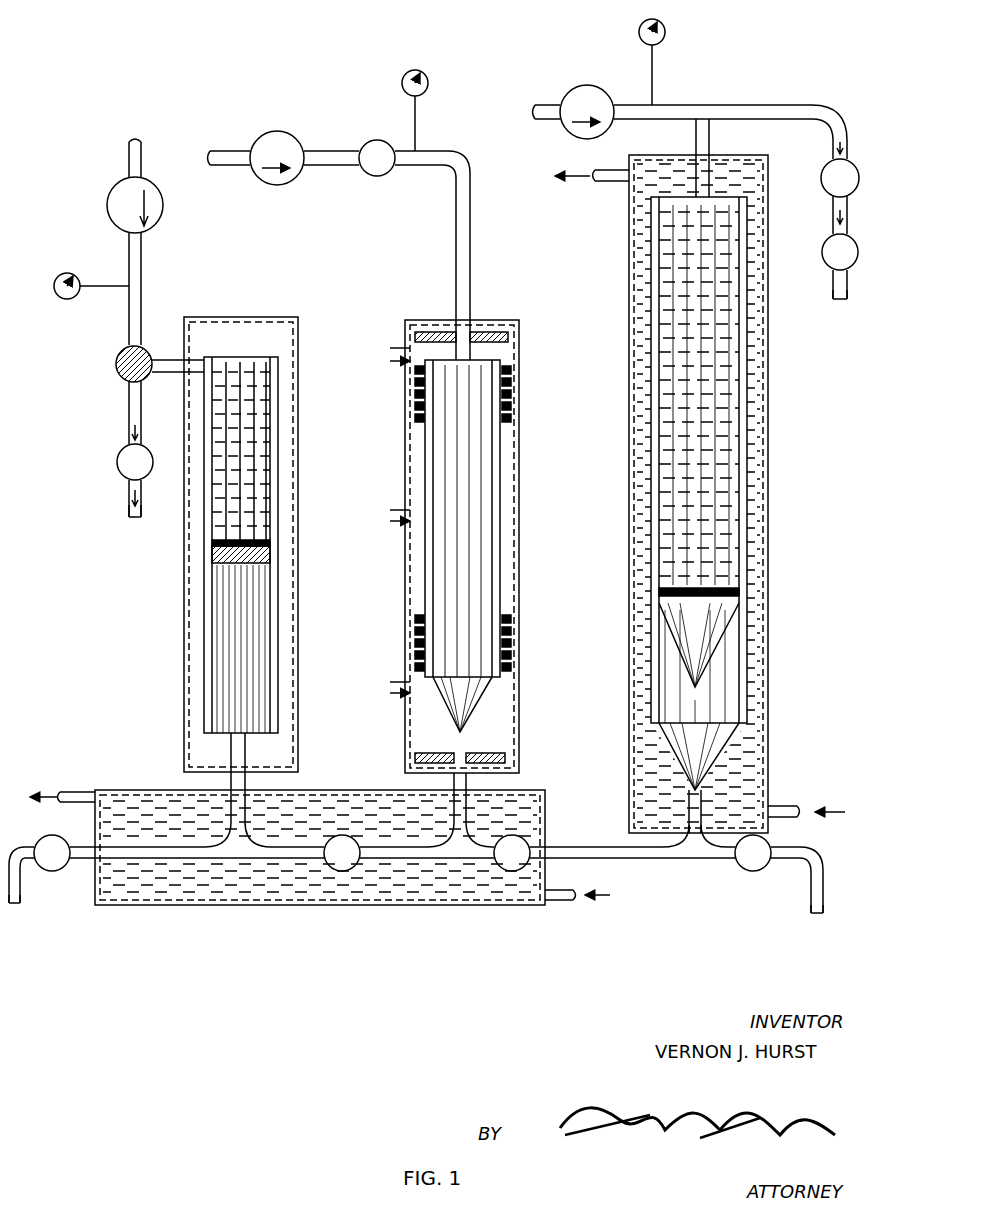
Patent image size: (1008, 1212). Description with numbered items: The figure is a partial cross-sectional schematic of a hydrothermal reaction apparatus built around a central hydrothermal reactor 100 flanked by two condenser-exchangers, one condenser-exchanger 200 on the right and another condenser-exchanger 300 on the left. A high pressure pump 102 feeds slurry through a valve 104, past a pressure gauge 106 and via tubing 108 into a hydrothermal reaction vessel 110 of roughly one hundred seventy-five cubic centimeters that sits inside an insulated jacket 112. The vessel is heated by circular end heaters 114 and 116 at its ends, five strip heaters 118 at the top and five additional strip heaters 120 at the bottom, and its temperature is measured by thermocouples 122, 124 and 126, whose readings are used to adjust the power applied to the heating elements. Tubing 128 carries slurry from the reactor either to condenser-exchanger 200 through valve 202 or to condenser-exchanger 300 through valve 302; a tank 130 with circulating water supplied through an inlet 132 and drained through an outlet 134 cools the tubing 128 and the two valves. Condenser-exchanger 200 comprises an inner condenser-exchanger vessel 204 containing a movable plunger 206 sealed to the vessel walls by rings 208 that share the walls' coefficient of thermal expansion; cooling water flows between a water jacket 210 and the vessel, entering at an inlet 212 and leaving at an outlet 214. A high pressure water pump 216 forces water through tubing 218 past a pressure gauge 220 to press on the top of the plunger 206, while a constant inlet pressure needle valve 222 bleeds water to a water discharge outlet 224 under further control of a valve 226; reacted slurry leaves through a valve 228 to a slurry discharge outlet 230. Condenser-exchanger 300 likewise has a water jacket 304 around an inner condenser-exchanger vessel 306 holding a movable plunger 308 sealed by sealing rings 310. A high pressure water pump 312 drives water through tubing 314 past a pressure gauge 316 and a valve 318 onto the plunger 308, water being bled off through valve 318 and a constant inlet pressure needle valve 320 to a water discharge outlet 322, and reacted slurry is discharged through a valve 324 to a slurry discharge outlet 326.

The hydrothermal reactor 100 is at (454, 527).
The high pressure pump 102 is at (258, 136).
The valve 104 is at (358, 131).
The pressure gauge 106 is at (446, 100).
The tubing 108 is at (369, 232).
The hydrothermal reaction vessel 110 is at (501, 526).
The insulated jacket 112 is at (491, 546).
The circular end heater 114 is at (496, 348).
The circular end heater 116 is at (496, 743).
The strip heaters 118 is at (496, 394).
The strip heaters 120 is at (496, 632).
The thermocouple 122 is at (370, 321).
The thermocouple 124 is at (371, 671).
The thermocouple 126 is at (373, 538).
The tubing 128 is at (416, 838).
The tank 130 is at (349, 847).
The inlet 132 is at (577, 917).
The outlet 134 is at (54, 774).
The condenser-exchanger 200 is at (738, 494).
The valve 202 is at (549, 845).
The inner condenser-exchanger vessel 204 is at (745, 515).
The movable plunger 206 is at (749, 639).
The rings 208 is at (749, 579).
The water jacket 210 is at (734, 494).
The inlet 212 is at (807, 795).
The outlet 214 is at (587, 200).
The high pressure water pump 216 is at (592, 78).
The tubing 218 is at (690, 176).
The pressure gauge 220 is at (689, 61).
The constant inlet pressure needle valve 222 is at (809, 160).
The water discharge outlet 224 is at (834, 323).
The valve 226 is at (817, 282).
The valve 228 is at (786, 845).
The slurry discharge outlet 230 is at (831, 927).
The condenser-exchanger 300 is at (274, 544).
The valve 302 is at (338, 811).
The water jacket 304 is at (266, 544).
The inner condenser-exchanger vessel 306 is at (276, 545).
The movable plunger 308 is at (283, 578).
The sealing rings 310 is at (283, 569).
The high pressure water pump 312 is at (101, 197).
The tubing 314 is at (153, 328).
The pressure gauge 316 is at (75, 312).
The valve 318 is at (118, 381).
The constant inlet pressure needle valve 320 is at (98, 456).
The water discharge outlet 322 is at (92, 527).
The valve 324 is at (58, 884).
The slurry discharge outlet 326 is at (29, 927).